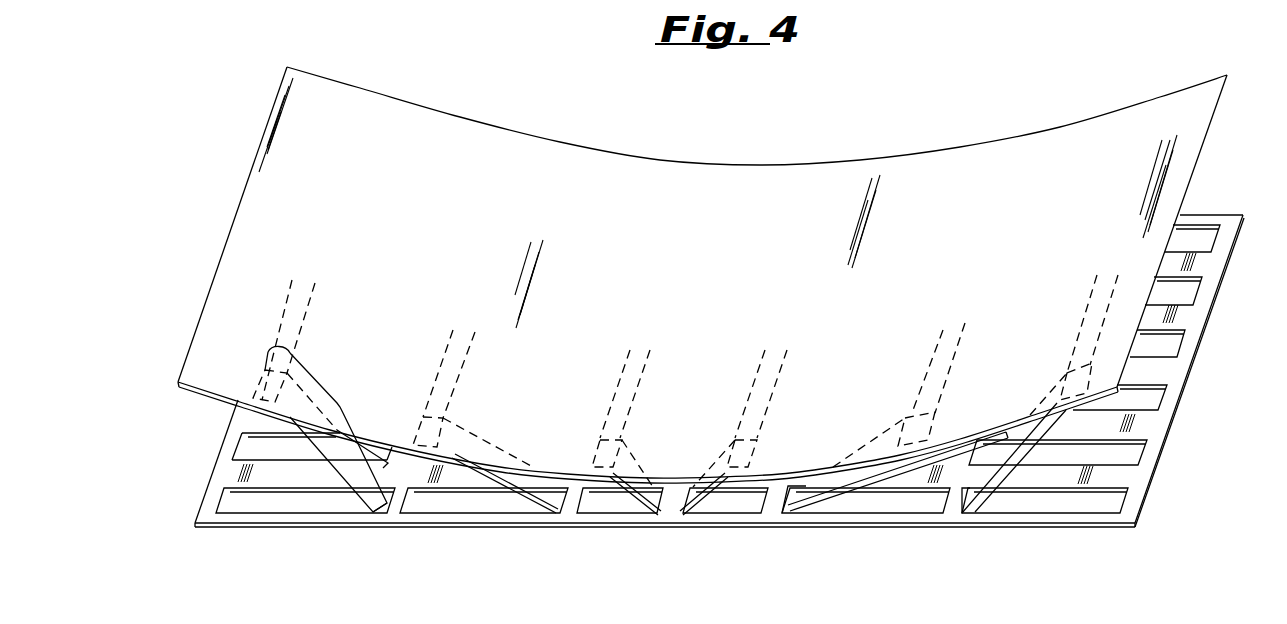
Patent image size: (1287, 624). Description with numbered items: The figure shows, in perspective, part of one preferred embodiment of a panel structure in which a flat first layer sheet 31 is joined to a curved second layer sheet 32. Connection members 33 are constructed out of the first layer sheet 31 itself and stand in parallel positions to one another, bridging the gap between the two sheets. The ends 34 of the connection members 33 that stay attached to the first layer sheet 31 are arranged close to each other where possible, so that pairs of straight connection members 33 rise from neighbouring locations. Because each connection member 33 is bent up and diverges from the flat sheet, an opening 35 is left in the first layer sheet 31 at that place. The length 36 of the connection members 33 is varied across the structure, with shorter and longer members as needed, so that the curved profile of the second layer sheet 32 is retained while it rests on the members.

The first layer sheet 31 is at (205, 487).
The second layer sheet 32 is at (222, 248).
The connection members 33 is at (353, 482).
The ends 34 is at (383, 503).
The opening 35 is at (275, 503).
The length 36 is at (318, 422).